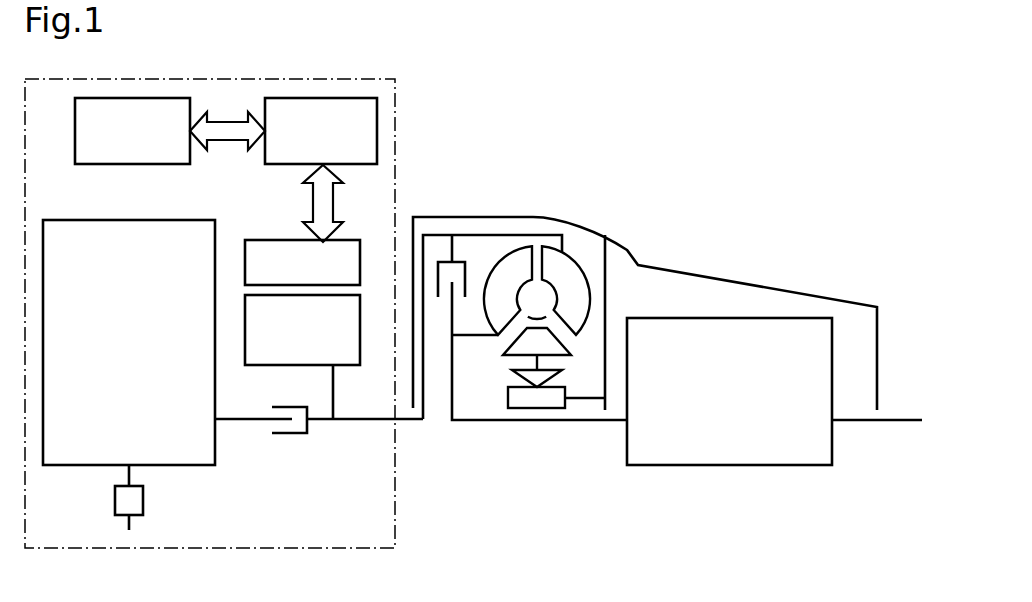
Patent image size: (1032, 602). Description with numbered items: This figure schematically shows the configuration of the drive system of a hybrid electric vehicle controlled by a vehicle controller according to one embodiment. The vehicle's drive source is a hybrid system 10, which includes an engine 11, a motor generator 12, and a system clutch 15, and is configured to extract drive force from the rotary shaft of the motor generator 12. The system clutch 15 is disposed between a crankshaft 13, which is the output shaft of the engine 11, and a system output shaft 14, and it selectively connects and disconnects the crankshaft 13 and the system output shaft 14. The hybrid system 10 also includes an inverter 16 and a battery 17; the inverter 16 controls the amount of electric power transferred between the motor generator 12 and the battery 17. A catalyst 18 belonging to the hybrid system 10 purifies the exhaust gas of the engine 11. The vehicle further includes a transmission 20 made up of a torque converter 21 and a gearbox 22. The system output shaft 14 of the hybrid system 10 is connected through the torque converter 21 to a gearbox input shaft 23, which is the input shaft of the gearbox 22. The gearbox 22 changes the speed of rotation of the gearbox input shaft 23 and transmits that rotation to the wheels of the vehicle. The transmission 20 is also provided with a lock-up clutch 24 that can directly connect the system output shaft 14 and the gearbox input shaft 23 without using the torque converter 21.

The hybrid system 10 is at (395, 519).
The engine 11 is at (133, 219).
The motor generator 12 is at (273, 239).
The crankshaft 13 is at (240, 423).
The system output shaft 14 is at (365, 424).
The system clutch 15 is at (290, 436).
The inverter 16 is at (377, 130).
The battery 17 is at (75, 127).
The catalyst 18 is at (113, 501).
The transmission 20 is at (572, 220).
The torque converter 21 is at (588, 286).
The gearbox 22 is at (728, 467).
The gearbox input shaft 23 is at (570, 423).
The lock-up clutch 24 is at (467, 288).